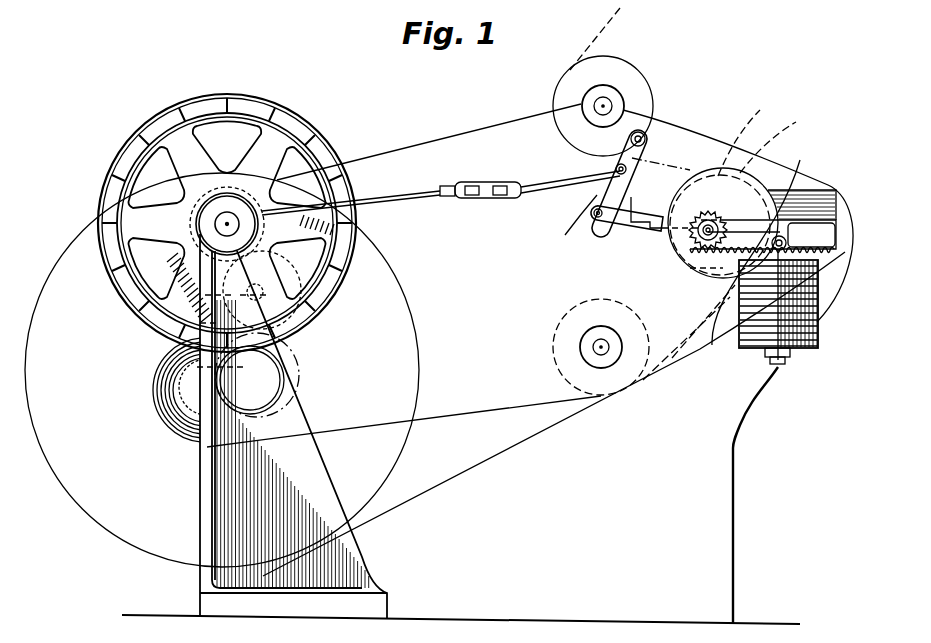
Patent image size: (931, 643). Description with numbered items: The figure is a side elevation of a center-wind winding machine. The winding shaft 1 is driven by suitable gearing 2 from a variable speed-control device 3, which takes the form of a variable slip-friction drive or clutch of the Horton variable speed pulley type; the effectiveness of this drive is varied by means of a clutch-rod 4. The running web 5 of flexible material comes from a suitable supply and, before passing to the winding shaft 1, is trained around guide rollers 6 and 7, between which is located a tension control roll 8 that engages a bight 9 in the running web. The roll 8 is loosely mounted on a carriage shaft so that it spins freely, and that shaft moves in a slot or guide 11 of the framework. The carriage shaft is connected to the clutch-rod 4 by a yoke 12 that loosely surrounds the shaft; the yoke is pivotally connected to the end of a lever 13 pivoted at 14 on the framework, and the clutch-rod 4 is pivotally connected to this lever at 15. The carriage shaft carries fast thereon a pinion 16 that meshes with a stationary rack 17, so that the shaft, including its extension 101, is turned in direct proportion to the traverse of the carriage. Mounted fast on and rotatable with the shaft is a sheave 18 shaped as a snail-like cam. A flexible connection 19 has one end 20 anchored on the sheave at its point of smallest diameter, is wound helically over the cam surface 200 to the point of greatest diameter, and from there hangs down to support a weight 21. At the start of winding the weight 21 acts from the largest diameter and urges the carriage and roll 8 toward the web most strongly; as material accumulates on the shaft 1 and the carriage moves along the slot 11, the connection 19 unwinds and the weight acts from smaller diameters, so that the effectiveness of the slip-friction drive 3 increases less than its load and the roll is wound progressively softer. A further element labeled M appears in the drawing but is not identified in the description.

The winding shaft 1 is at (298, 354).
The gearing 2 is at (174, 378).
The variable speed-control device 3 is at (287, 107).
The clutch-rod 4 is at (400, 198).
The running web 5 is at (604, 26).
The guide roller 6 is at (636, 93).
The guide roller 7 is at (553, 345).
The tension control roll 8 is at (764, 184).
The bight 9 is at (672, 214).
The slot or guide 11 is at (768, 196).
The yoke 12 is at (630, 226).
The lever 13 is at (572, 227).
The pivot 14 is at (647, 134).
The pivotal connection 15 is at (628, 173).
The pinion 16 is at (738, 174).
The stationary rack 17 is at (823, 303).
The sheave 18 is at (688, 241).
The flexible connection 19 is at (784, 237).
The anchored end 20 is at (738, 345).
The weight 21 is at (792, 360).
The extension of shaft 101 is at (706, 241).
The cam surface 200 is at (700, 185).
The motor M is at (178, 424).